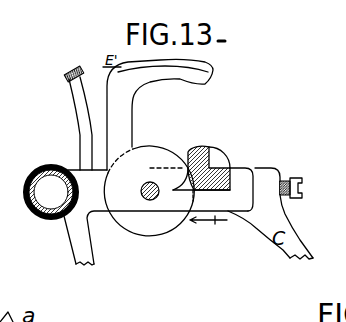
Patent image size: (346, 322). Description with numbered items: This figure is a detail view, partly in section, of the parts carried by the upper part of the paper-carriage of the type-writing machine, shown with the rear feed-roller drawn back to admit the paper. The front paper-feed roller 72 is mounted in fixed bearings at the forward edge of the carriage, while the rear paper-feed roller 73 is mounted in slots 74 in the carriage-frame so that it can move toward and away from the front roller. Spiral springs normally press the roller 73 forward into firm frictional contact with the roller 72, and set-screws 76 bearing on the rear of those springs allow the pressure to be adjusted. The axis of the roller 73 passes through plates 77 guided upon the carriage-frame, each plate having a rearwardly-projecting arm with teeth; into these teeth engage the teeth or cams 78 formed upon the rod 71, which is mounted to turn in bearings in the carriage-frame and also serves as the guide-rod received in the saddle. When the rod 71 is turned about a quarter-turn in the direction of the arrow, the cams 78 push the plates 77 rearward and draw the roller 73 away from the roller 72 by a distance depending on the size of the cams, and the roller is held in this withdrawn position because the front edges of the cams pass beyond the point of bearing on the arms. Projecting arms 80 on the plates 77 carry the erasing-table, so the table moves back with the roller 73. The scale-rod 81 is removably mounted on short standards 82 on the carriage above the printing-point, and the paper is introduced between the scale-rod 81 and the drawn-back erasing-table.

The rod 71 is at (209, 162).
The paper-feed roller 72 is at (61, 166).
The paper-feed roller 73 is at (149, 191).
The slots 74 is at (139, 193).
The set-screws 76 is at (302, 192).
The plates 77 is at (241, 189).
The teeth or cams 78 is at (225, 160).
The projecting arms 80 is at (160, 124).
The scale-rod 81 is at (66, 78).
The standards 82 is at (80, 123).